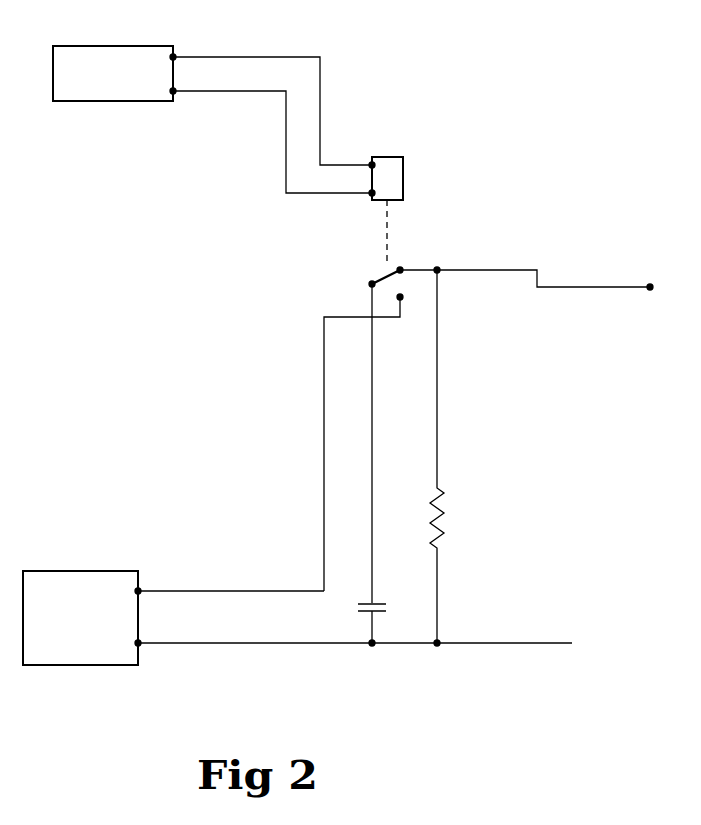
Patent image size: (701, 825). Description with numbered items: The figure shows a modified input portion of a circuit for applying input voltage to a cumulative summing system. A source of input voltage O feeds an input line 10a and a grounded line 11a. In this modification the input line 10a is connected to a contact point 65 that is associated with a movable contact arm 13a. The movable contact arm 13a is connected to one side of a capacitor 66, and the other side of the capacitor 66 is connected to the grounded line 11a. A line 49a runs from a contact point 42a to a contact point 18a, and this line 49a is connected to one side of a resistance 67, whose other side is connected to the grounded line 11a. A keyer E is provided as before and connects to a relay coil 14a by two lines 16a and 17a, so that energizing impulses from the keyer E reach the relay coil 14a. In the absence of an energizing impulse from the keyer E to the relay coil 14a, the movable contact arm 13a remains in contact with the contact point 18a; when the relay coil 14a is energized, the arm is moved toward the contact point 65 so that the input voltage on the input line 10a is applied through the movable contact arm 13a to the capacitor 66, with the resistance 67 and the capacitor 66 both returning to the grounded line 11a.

The keyer E is at (128, 46).
The line 16a is at (270, 57).
The line 17a is at (227, 92).
The relay coil 14a is at (404, 177).
The movable contact arm 13a is at (383, 278).
The contact point 18a is at (400, 268).
The line 49a is at (496, 270).
The contact point 42a is at (650, 284).
The contact point 65 is at (401, 298).
The resistance 67 is at (446, 500).
The capacitor 66 is at (367, 603).
The source of input voltage O is at (62, 571).
The input line 10a is at (242, 591).
The grounded line 11a is at (250, 645).